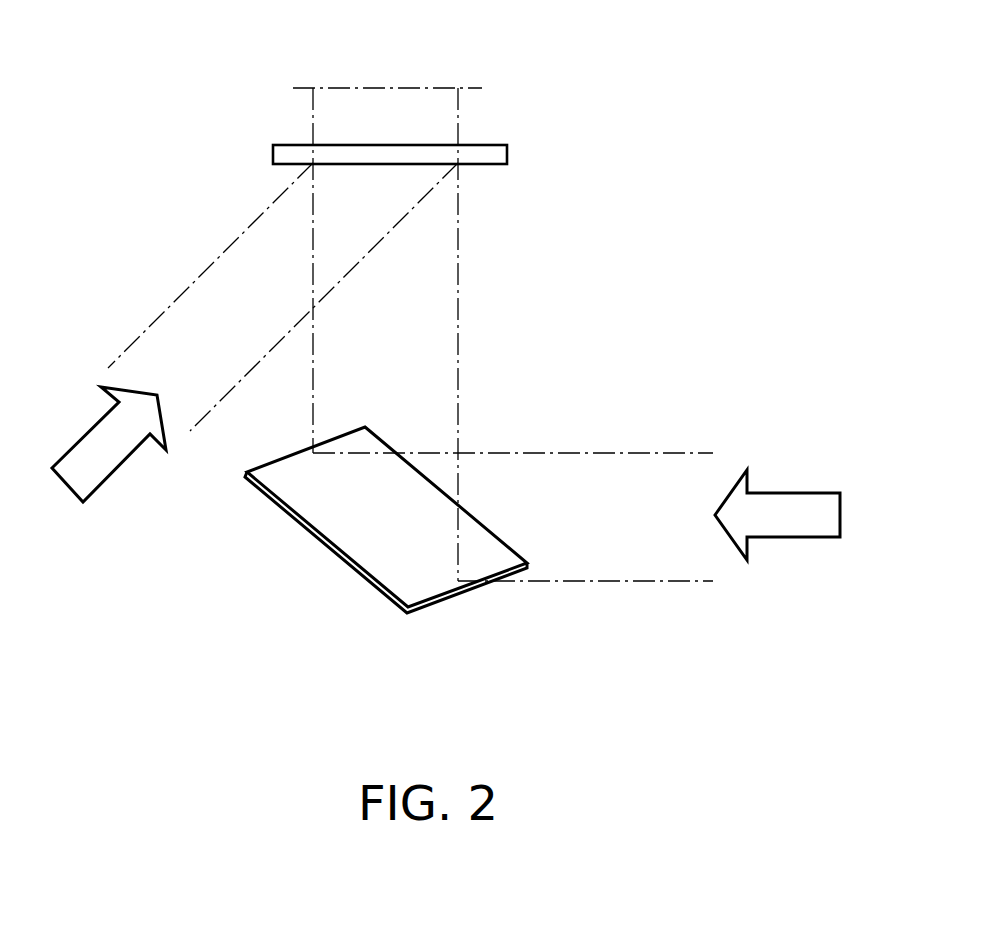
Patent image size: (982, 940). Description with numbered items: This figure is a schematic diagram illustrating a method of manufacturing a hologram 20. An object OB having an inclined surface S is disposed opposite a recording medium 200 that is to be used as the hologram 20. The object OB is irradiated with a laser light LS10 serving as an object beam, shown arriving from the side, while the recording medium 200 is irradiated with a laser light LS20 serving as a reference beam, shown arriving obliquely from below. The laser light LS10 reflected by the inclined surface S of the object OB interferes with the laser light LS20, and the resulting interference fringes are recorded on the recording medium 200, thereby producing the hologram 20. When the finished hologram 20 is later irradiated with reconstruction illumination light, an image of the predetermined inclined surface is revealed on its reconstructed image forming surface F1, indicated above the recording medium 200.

The reconstructed image forming surface F1 is at (300, 88).
The recording medium 200 is at (457, 161).
The hologram 20 is at (498, 153).
The laser light for use as a reference beam LS20 is at (92, 468).
The laser light for use as an object beam LS10 is at (778, 510).
The object OB is at (386, 549).
The inclined surface S is at (393, 562).